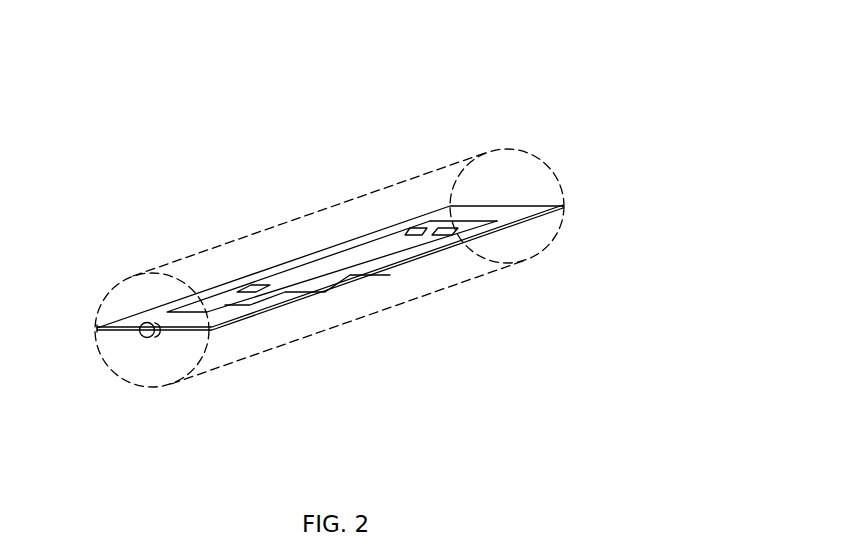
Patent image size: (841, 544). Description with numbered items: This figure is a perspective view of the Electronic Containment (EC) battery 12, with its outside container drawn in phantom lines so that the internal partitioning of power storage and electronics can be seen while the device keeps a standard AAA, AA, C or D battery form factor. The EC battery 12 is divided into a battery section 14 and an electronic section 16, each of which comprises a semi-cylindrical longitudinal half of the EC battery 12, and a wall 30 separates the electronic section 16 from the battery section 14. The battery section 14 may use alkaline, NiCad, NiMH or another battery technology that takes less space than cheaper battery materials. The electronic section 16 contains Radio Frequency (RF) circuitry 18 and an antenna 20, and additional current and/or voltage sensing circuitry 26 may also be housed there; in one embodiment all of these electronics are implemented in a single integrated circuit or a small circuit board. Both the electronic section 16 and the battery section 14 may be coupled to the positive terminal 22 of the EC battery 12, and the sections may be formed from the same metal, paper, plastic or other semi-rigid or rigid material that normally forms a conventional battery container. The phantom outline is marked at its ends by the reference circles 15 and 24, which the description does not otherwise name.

The Electronic Containment (EC) battery 12 is at (443, 195).
The battery section 14 is at (395, 292).
The distal end region 15 is at (148, 375).
The electronic section 16 is at (518, 170).
The Radio Frequency (RF) circuitry 18 is at (355, 258).
The antenna 20 is at (283, 290).
The positive terminal 22 is at (142, 337).
The distal tip 24 is at (105, 298).
The current and/or voltage sensing circuitry 26 is at (442, 227).
The wall 30 is at (520, 213).